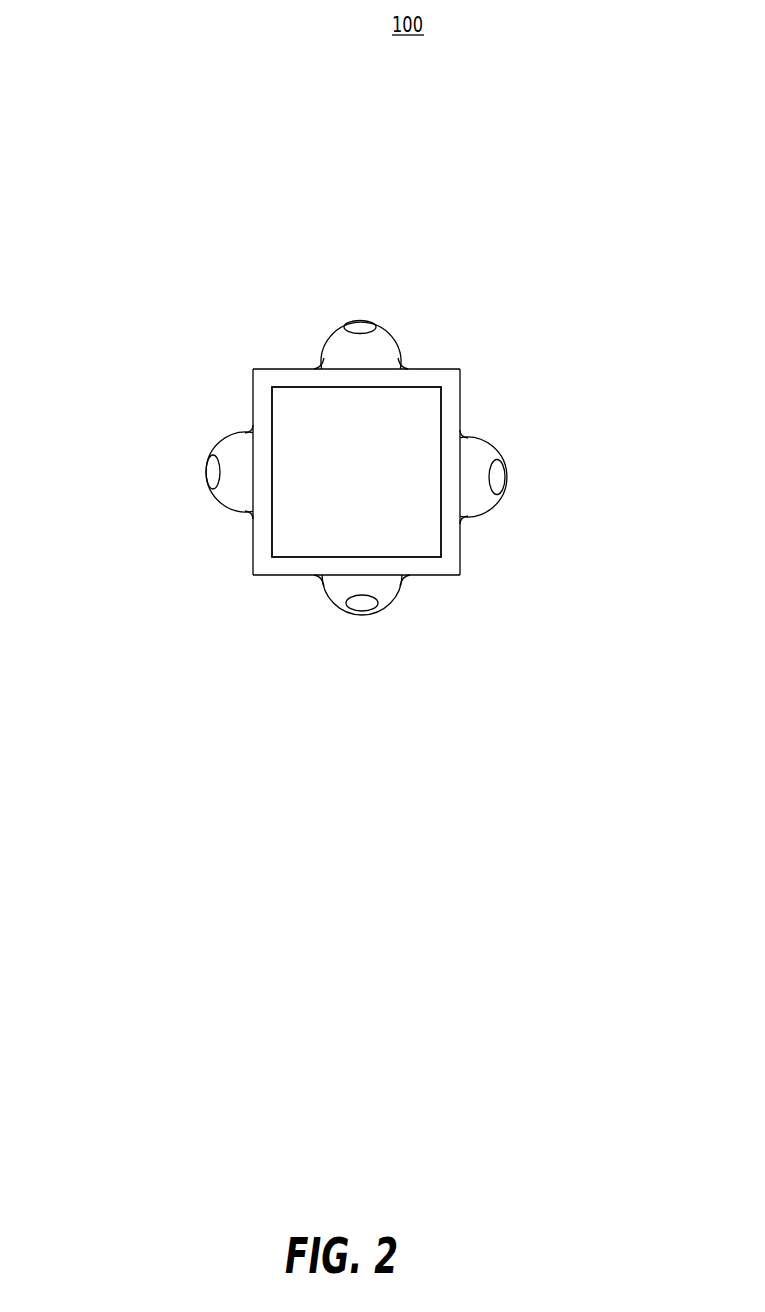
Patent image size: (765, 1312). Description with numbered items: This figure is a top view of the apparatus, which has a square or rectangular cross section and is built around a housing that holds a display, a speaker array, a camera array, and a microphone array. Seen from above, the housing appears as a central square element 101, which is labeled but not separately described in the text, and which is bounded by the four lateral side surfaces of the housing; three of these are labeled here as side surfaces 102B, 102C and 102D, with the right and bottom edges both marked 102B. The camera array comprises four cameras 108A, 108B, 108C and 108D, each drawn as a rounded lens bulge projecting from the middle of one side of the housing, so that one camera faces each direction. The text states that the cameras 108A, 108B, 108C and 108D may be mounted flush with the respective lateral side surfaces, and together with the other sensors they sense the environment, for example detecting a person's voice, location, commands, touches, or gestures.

The housing 101 is at (385, 474).
The lateral side surface 102B is at (460, 548).
The lateral side surface 102C is at (442, 369).
The lateral side surface 102D is at (253, 390).
The camera 108A is at (336, 606).
The camera 108B is at (508, 472).
The camera 108C is at (357, 320).
The camera 108D is at (207, 478).